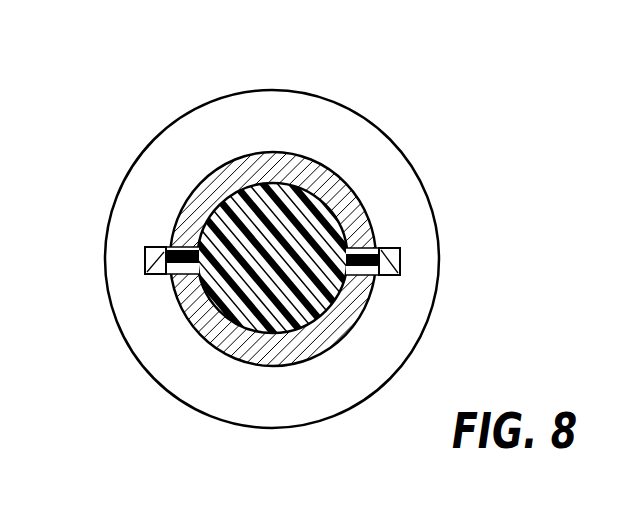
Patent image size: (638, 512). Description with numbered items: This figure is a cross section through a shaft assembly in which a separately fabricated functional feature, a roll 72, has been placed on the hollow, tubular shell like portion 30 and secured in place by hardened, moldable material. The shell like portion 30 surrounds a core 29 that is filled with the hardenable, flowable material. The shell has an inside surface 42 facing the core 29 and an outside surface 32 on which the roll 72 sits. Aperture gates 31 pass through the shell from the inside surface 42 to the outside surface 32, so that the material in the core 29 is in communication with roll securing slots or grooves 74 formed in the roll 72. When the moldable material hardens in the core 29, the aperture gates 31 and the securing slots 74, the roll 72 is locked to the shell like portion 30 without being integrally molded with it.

The core 29 is at (345, 187).
The shell like portion 30 is at (275, 167).
The aperture gates 31 is at (176, 246).
The outside surface 32 is at (222, 163).
The inside surface 42 is at (216, 213).
The roll 72 is at (226, 422).
The roll securing slots or grooves 74 is at (144, 273).